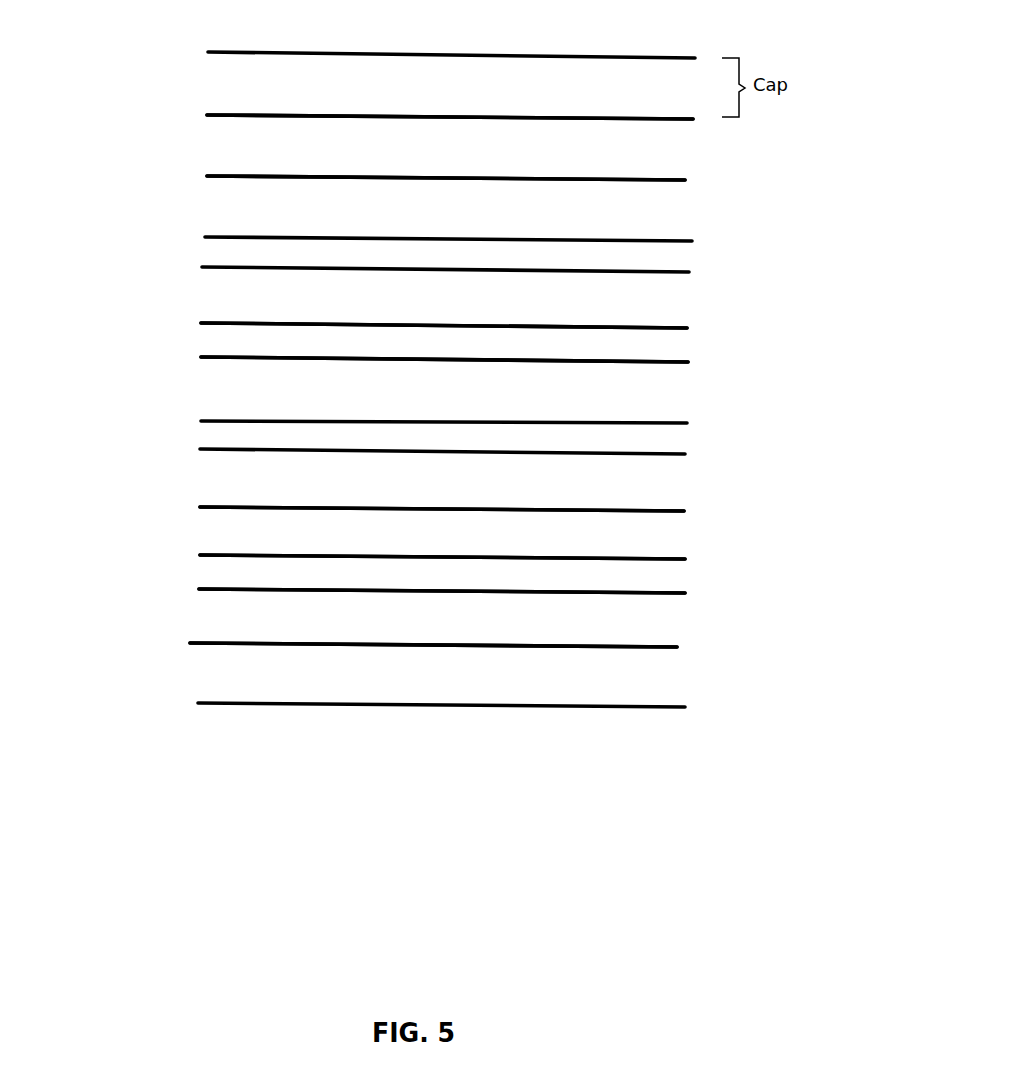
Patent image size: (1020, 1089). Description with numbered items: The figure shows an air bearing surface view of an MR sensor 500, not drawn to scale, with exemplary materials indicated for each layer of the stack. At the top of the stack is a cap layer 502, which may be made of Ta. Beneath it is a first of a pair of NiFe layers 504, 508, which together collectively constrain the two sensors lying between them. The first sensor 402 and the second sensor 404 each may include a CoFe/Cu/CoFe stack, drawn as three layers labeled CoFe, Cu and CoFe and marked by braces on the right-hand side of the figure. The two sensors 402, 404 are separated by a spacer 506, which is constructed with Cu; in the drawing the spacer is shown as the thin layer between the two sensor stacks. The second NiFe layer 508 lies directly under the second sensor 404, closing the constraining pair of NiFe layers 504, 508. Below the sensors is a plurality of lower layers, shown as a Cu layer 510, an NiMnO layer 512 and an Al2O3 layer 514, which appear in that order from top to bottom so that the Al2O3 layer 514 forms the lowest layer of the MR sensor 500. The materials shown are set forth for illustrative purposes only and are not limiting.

The MR sensor 500 is at (267, 770).
The cap layer 502 is at (208, 83).
The NiFe layer 504 is at (208, 145).
The spacer 506 is at (219, 342).
The NiFe layer 508 is at (216, 523).
The Cu layer 510 is at (200, 571).
The NiMnO layer 512 is at (216, 618).
The Al2O3 layer 514 is at (203, 674).
The sensor 402 is at (725, 331).
The sensor 404 is at (718, 518).